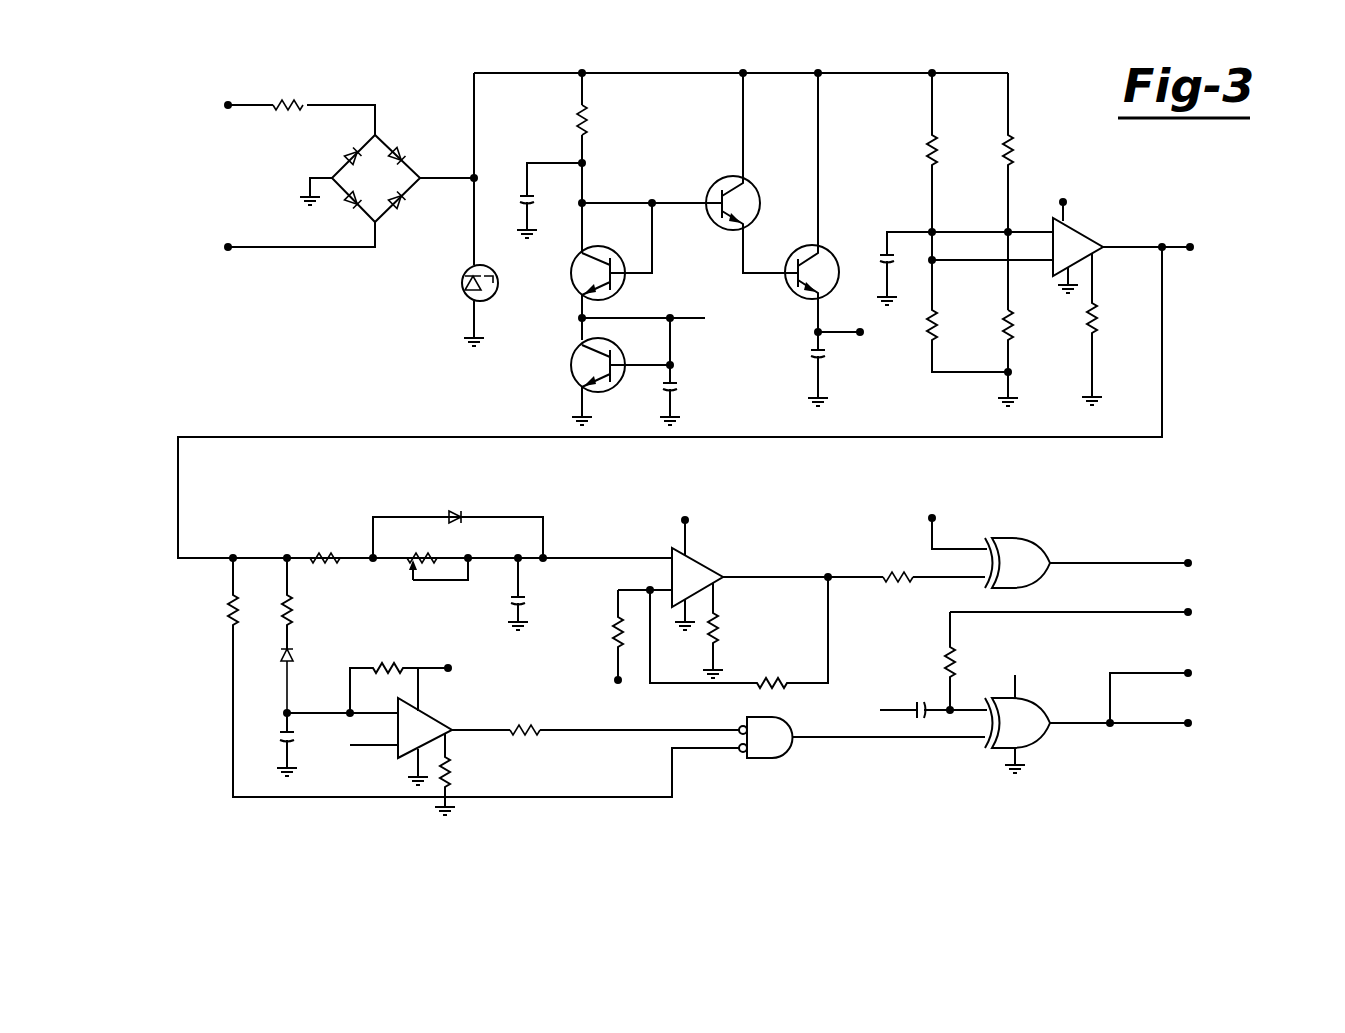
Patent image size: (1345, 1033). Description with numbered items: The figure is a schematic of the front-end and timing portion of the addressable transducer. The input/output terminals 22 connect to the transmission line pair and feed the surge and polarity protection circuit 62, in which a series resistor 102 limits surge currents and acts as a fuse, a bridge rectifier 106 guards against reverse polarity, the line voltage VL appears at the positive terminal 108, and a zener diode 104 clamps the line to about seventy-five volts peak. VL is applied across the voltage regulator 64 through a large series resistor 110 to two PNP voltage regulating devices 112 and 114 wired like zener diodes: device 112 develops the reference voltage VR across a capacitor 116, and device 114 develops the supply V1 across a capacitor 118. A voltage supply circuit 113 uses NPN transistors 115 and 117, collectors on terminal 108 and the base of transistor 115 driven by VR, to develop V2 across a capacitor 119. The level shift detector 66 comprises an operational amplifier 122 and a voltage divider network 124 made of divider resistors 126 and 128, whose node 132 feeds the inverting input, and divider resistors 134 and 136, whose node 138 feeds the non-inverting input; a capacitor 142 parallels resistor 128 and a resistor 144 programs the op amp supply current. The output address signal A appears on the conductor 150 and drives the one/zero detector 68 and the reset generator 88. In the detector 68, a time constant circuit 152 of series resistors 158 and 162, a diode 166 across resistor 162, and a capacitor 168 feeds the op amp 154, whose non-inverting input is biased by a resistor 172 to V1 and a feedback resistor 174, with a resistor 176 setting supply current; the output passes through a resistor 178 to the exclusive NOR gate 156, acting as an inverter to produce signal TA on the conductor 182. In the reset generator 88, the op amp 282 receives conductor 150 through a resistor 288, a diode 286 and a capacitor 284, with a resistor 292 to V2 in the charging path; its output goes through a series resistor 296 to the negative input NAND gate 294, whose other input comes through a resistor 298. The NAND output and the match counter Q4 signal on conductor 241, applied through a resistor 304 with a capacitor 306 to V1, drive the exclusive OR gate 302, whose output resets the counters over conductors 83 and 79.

The input/output terminals 22 is at (228, 105).
The series resistor 102 is at (290, 104).
The surge and polarity protection circuit 62 is at (370, 90).
The bridge rectifier 106 is at (375, 137).
The positive terminal 108 is at (474, 178).
The zener diode 104 is at (462, 292).
The voltage regulator 64 is at (580, 68).
The series resistor 110 is at (582, 122).
The capacitor 116 is at (527, 196).
The voltage regulating device 112 is at (642, 228).
The voltage supply circuit 113 is at (722, 172).
The NPN transistor 115 is at (750, 188).
The voltage regulating device 114 is at (604, 341).
The capacitor 118 is at (680, 387).
The NPN transistor 117 is at (822, 248).
The capacitor 119 is at (832, 358).
The level shift detector 66 is at (915, 138).
The divider resistor 126 is at (935, 135).
The node 132 is at (935, 225).
The capacitor 142 is at (900, 257).
The node 138 is at (980, 232).
The divider resistor 128 is at (935, 318).
The divider resistor 134 is at (1010, 138).
The divider resistor 136 is at (1018, 320).
The voltage divider network 124 is at (1022, 178).
The operational amplifier 122 is at (1078, 228).
The resistor 144 is at (1097, 315).
The conductor 150 is at (1163, 245).
The one/zero detector 68 is at (420, 497).
The series resistor 158 is at (363, 515).
The diode 166 is at (465, 515).
The series resistor 162 is at (428, 556).
The time constant circuit 152 is at (404, 575).
The capacitor 168 is at (527, 595).
The operational amplifier 154 is at (700, 560).
The resistor 172 is at (616, 628).
The feedback resistor 174 is at (775, 680).
The resistor 176 is at (720, 627).
The resistor 178 is at (893, 565).
The exclusive NOR gate 156 is at (1030, 540).
The conductor 182 is at (1115, 560).
The reset generator 88 is at (203, 684).
The resistor 298 is at (225, 605).
The resistor 288 is at (292, 612).
The diode 286 is at (295, 655).
The capacitor 284 is at (266, 738).
The resistor 292 is at (388, 665).
The operational amplifier 282 is at (434, 720).
The series resistor 296 is at (525, 725).
The negative input NAND gate 294 is at (762, 720).
The resistor 304 is at (945, 655).
The conductor 241 is at (1105, 598).
The capacitor 306 is at (913, 707).
The exclusive OR gate 302 is at (1035, 700).
The conductor 83 is at (1143, 655).
The conductor 79 is at (1158, 723).